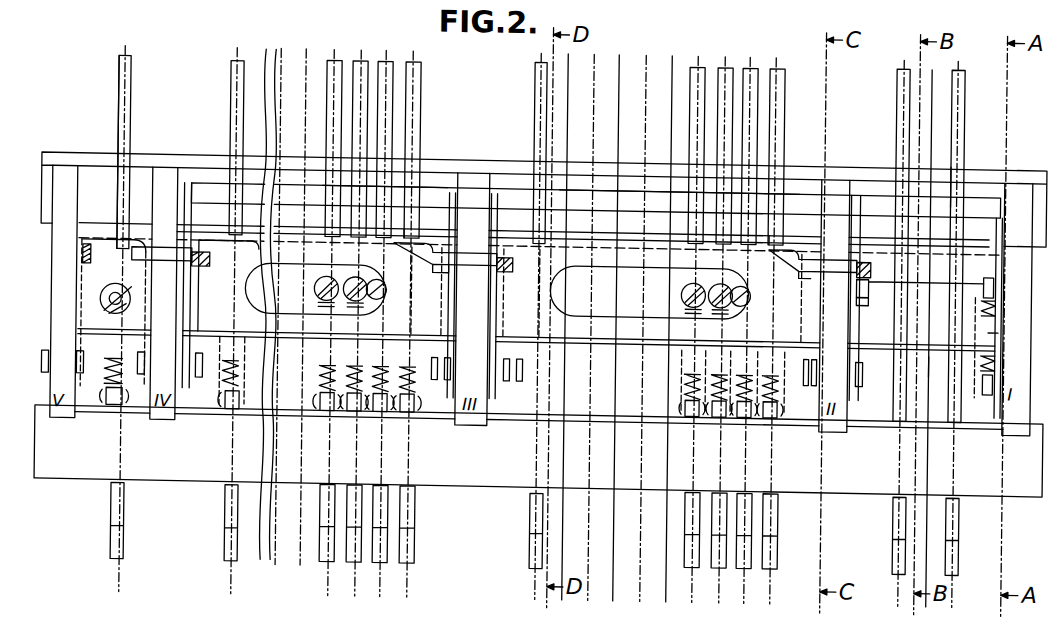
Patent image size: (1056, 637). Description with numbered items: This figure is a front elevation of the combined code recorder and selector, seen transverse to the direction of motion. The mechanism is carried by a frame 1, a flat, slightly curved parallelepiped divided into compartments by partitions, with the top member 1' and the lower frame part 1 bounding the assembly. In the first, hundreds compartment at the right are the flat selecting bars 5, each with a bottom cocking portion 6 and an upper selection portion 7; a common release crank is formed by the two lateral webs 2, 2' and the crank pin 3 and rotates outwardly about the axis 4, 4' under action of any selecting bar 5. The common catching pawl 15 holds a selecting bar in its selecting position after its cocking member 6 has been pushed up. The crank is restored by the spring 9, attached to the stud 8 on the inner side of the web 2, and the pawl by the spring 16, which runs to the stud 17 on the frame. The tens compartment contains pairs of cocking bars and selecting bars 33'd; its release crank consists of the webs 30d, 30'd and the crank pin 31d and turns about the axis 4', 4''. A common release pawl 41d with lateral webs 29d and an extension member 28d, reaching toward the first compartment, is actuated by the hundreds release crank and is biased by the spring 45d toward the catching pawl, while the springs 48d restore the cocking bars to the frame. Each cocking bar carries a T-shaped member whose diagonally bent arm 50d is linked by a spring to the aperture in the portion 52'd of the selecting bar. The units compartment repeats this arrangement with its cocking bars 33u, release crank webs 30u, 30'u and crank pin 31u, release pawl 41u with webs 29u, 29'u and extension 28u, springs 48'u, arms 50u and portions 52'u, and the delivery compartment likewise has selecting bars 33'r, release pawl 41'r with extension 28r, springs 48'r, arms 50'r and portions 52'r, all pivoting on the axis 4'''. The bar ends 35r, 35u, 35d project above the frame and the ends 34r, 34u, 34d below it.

The frame 1 is at (541, 320).
The frame rod 1' is at (969, 171).
The lateral web of release crank 2 is at (998, 348).
The lateral web of release crank 2' is at (846, 360).
The crank pin 3 is at (958, 191).
The axis 4 is at (979, 397).
The axis 4' is at (873, 375).
The axis 4'' is at (477, 383).
The roller 4''' is at (121, 364).
The selecting bar 5 is at (962, 351).
The cocking portion 6 is at (965, 542).
The selection portion 7 is at (957, 90).
The stud 8 is at (1000, 304).
The restoring spring 9 is at (992, 315).
The catching pawl 15 is at (980, 278).
The restoring spring 16 is at (919, 293).
The stud 17 is at (860, 288).
The extension member 28r is at (138, 248).
The extension member 28u is at (458, 242).
The extension member 28d is at (827, 247).
The lateral web of release pawl 29'u is at (214, 372).
The lateral web of release pawl 29u is at (448, 342).
The lateral web of release pawl 29d is at (562, 348).
The lateral web of release crank 30'u is at (221, 287).
The lateral web of release crank 30u is at (450, 291).
The lateral web of release crank 30'd is at (513, 293).
The lateral web of release crank 30d is at (814, 297).
The crank pin 31u is at (320, 185).
The crank pin 31d is at (701, 192).
The selecting bar 33'r is at (91, 151).
The cocking bar 33u is at (406, 215).
The selecting bar 33'd is at (796, 192).
The lower rod r 34r is at (122, 553).
The lower rods u 34u is at (415, 562).
The lower rods d 34d is at (780, 554).
The upper rod r 35r is at (128, 68).
The upper rods u 35u is at (411, 51).
The upper rods d 35d is at (777, 54).
The release pawl 41'r is at (150, 256).
The release pawl 41u is at (340, 247).
The release pawl 41d is at (709, 238).
The restoring spring 45d is at (567, 268).
The restoring spring 48'r is at (98, 398).
The restoring spring 48'u is at (386, 405).
The restoring spring 48d is at (748, 372).
The arm of T-shaped member 50'r is at (108, 290).
The arm of T-shaped member 50u is at (325, 272).
The arm of T-shaped member 50d is at (741, 296).
The portion of selecting bar 52'r is at (136, 412).
The portion of selecting bar 52'u is at (382, 430).
The portion of selecting bar 52'd is at (752, 422).